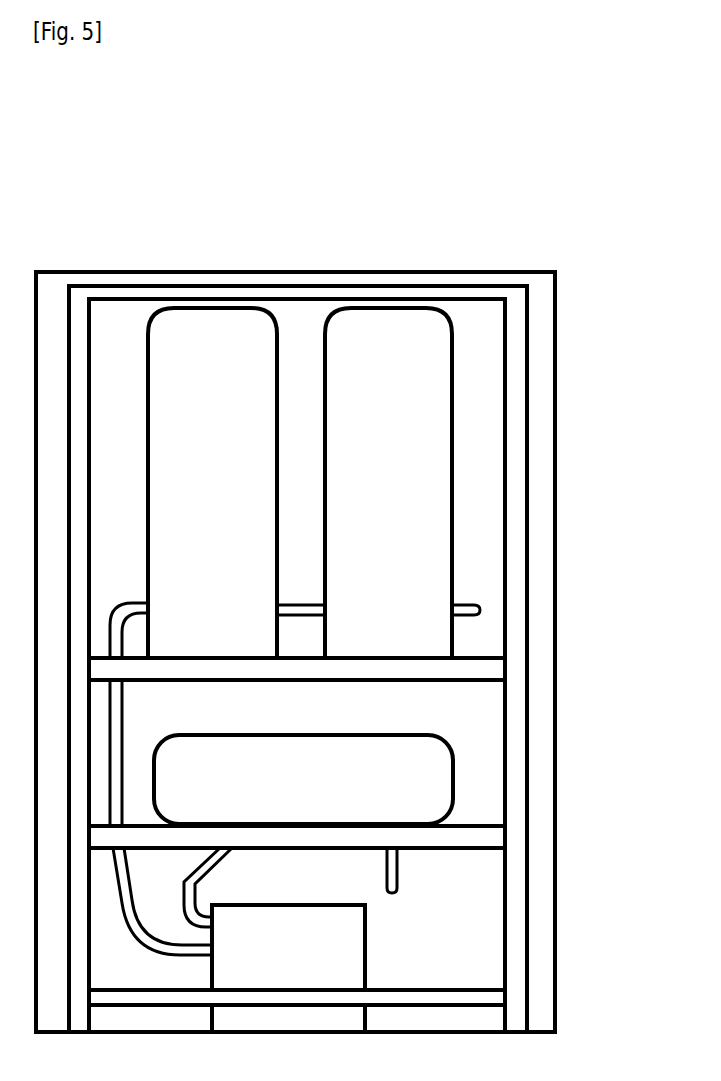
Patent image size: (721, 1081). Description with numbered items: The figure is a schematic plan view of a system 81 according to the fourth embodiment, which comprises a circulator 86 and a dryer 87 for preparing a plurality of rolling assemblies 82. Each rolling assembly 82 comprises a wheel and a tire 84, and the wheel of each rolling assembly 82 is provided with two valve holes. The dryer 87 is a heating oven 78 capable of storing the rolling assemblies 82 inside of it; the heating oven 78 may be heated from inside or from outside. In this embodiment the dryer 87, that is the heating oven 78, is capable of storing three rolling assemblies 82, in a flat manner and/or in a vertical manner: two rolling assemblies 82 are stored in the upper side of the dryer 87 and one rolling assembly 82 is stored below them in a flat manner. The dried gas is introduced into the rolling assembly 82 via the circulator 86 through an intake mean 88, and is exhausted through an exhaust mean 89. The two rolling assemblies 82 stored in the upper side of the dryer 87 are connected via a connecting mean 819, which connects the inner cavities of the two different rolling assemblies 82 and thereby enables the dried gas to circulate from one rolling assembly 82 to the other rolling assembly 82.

The system 81 is at (576, 238).
The dryer 87 is at (556, 438).
The heating oven 78 is at (556, 647).
The rolling assembly 82 is at (220, 472).
The tire 84 is at (324, 411).
The connecting mean 819 is at (292, 603).
The exhaust mean 89 is at (473, 603).
The intake mean 88 is at (178, 897).
The circulator 86 is at (290, 973).